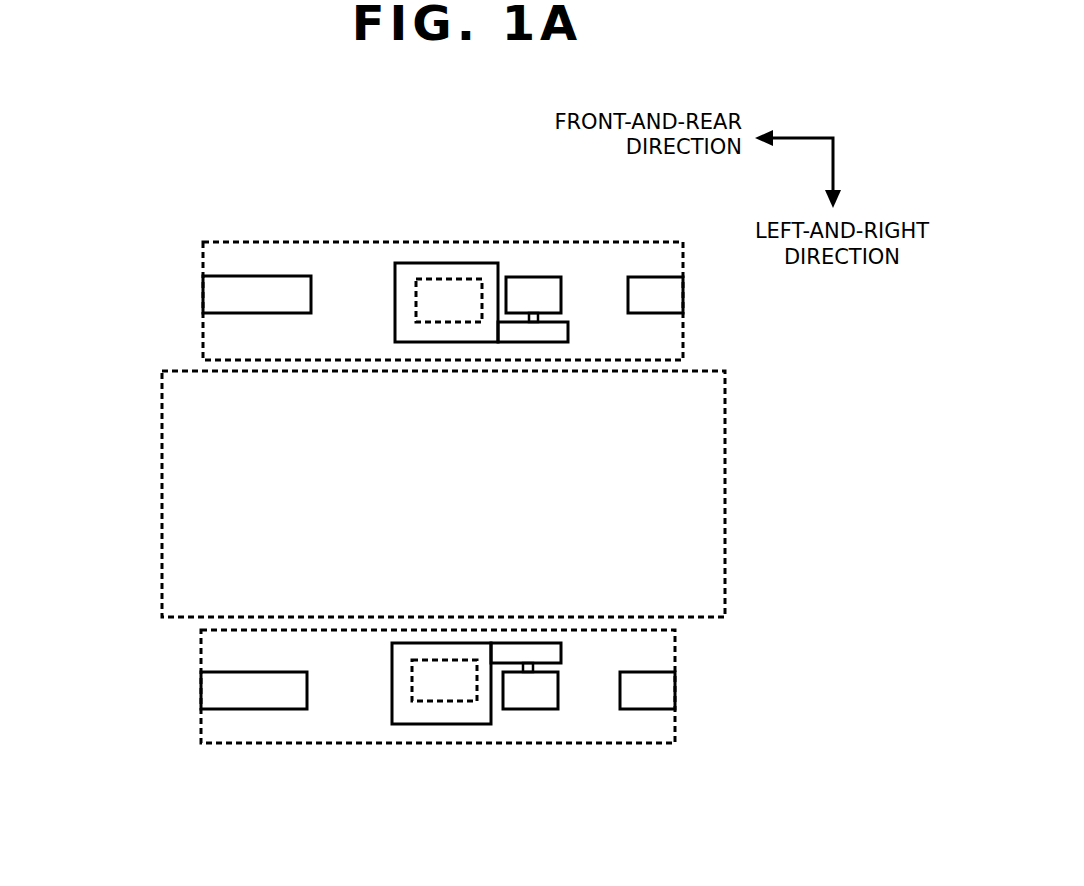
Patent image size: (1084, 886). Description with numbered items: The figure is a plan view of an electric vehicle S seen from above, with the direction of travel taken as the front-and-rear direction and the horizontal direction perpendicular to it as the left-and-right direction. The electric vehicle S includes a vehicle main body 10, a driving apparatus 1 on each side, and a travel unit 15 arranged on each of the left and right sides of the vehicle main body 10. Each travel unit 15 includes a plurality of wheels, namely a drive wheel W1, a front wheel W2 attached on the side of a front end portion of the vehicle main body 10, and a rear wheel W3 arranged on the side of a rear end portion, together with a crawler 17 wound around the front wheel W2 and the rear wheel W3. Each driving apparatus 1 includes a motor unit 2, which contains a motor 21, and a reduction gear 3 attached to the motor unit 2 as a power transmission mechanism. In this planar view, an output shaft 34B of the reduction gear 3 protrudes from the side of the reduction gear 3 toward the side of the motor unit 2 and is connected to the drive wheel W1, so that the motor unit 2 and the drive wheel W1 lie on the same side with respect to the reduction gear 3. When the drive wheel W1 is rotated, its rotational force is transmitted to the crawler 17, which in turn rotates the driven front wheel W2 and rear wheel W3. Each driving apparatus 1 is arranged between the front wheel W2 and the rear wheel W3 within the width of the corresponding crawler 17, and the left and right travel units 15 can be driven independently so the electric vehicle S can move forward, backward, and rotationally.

The electric vehicle S is at (118, 212).
The vehicle main body 10 is at (134, 495).
The travel unit 15 is at (174, 680).
The crawler 17 is at (684, 326).
The driving apparatus 1 is at (462, 250).
The motor 21 is at (420, 280).
The motor unit 2 is at (460, 342).
The reduction gear 3 is at (528, 342).
The output shaft 34B is at (539, 317).
The drive wheel W1 is at (527, 277).
The front wheel W2 is at (252, 276).
The rear wheel W3 is at (642, 277).